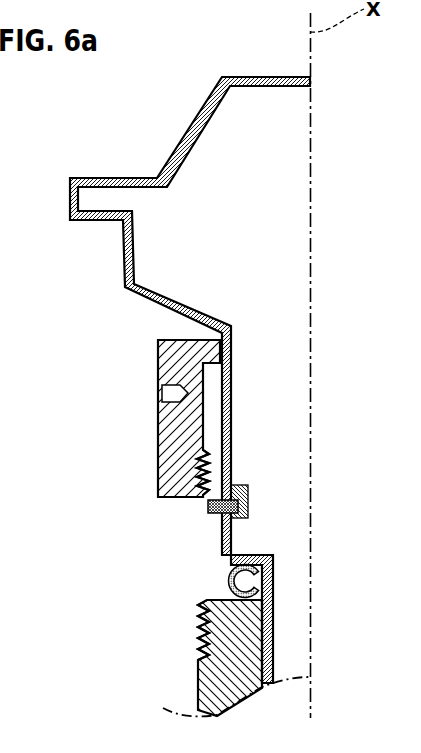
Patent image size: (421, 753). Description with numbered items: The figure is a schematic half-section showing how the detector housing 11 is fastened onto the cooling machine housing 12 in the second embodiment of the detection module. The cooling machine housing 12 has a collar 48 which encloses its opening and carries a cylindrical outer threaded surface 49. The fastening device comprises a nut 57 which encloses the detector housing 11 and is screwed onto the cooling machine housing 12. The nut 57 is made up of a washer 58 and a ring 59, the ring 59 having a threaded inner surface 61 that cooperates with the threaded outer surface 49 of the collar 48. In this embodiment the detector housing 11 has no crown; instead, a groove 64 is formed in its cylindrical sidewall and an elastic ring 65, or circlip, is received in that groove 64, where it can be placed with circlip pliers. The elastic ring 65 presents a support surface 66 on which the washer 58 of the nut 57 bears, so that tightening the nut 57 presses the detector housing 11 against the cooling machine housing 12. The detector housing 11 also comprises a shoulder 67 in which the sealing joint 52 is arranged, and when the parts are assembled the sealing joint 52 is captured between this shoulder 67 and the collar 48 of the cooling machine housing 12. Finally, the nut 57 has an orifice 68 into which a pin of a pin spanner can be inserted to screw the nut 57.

The detector housing 11 is at (220, 436).
The cooling machine housing 12 is at (218, 690).
The collar 48 is at (237, 636).
The cylindrical outer threaded surface 49 is at (203, 623).
The sealing joint 52 is at (248, 582).
The nut 57 is at (158, 365).
The washer 58 is at (208, 350).
The ring 59 is at (170, 428).
The threaded inner surface 61 is at (205, 469).
The groove 64 is at (238, 515).
The elastic ring 65 is at (212, 503).
The support surface 66 is at (215, 497).
The shoulder 67 is at (223, 575).
The orifice 68 is at (165, 393).